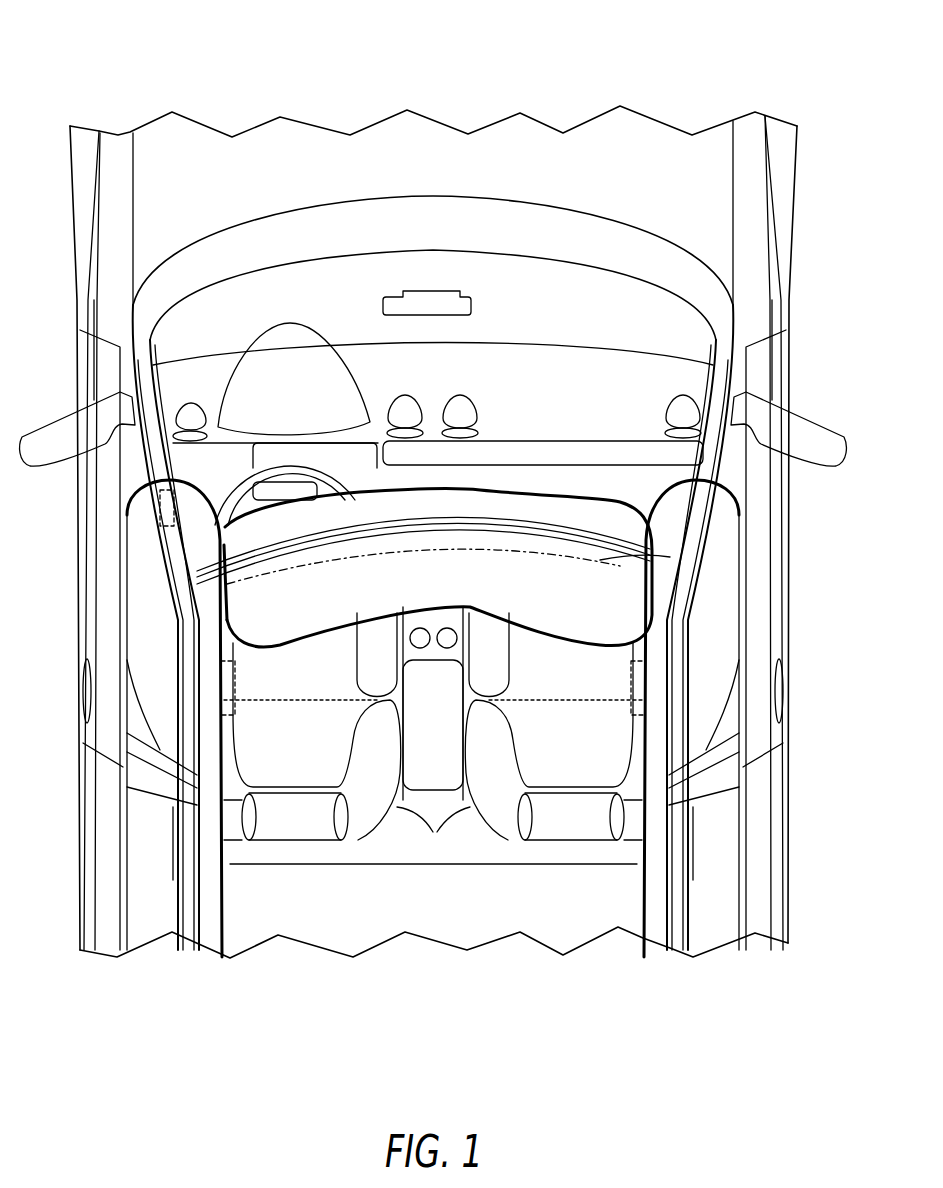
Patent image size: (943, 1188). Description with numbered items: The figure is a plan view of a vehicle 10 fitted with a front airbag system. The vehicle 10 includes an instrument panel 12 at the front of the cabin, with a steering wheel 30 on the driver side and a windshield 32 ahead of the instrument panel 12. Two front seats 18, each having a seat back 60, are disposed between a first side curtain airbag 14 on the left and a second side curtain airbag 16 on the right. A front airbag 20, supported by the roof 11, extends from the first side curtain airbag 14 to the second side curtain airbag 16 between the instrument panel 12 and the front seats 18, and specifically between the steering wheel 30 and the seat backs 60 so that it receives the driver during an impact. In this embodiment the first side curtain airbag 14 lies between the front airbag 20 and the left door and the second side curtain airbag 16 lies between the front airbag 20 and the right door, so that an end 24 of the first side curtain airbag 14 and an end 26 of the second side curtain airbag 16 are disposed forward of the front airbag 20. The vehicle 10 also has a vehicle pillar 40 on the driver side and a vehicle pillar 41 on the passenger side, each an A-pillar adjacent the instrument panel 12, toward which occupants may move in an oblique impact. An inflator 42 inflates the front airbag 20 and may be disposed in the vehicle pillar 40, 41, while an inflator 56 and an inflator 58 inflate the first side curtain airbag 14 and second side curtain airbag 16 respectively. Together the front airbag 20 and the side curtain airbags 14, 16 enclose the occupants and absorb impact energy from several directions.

The vehicle 10 is at (86, 60).
The roof 11 is at (670, 557).
The instrument panel 12 is at (525, 370).
The first side curtain airbag 14 is at (145, 565).
The second side curtain airbag 16 is at (716, 610).
The front seats 18 is at (503, 820).
The front airbag 20 is at (518, 510).
The end of the first side curtain airbag 24 is at (183, 487).
The end of the second side curtain airbag 26 is at (686, 483).
The steering wheel 30 is at (290, 475).
The windshield 32 is at (315, 288).
The vehicle pillar 40 is at (160, 462).
The vehicle pillar 41 is at (730, 372).
The inflator 42 is at (160, 522).
The inflator 56 is at (220, 680).
The inflator 58 is at (645, 678).
The seat back 60 is at (433, 735).